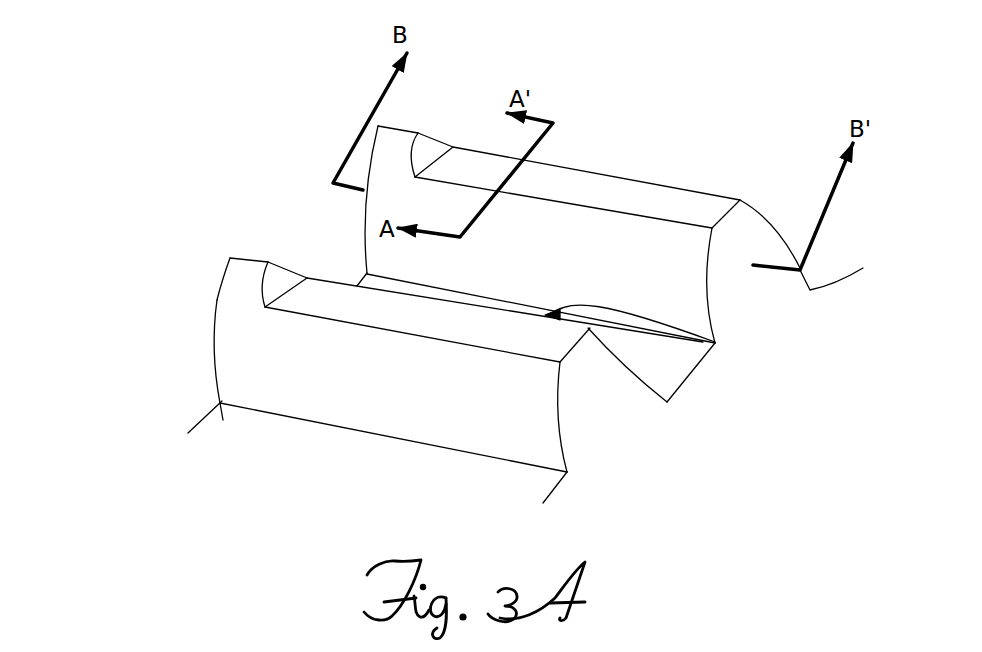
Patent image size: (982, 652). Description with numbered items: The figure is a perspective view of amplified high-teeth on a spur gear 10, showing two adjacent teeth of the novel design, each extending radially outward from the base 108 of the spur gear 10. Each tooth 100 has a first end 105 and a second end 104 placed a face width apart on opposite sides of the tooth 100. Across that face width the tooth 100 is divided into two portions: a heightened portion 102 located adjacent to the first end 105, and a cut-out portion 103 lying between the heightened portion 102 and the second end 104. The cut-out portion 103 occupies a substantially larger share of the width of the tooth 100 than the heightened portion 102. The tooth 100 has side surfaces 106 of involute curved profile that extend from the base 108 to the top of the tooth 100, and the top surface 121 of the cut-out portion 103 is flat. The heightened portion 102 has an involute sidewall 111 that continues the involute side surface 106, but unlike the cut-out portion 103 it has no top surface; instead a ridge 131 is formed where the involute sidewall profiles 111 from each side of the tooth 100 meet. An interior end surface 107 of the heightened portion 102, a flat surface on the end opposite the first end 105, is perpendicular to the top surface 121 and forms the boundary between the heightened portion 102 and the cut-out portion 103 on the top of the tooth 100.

The spur gear 10 is at (75, 330).
The tooth 100 is at (443, 133).
The heightened portion 102 is at (347, 140).
The cut-out portion 103 is at (722, 272).
The second end 104 is at (587, 408).
The first end 105 is at (213, 347).
The side surfaces 106 is at (330, 377).
The interior end surface 107 is at (283, 283).
The base 108 is at (220, 407).
The involute sidewall 111 is at (243, 280).
The top surface 121 is at (436, 320).
The ridge 131 is at (258, 258).